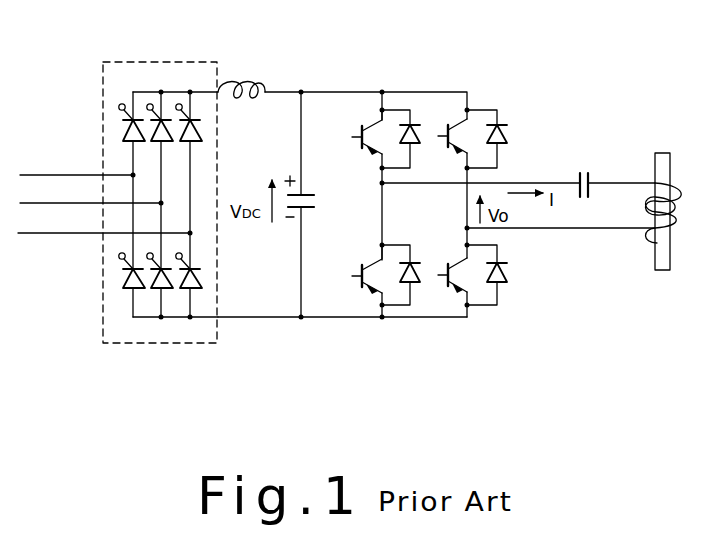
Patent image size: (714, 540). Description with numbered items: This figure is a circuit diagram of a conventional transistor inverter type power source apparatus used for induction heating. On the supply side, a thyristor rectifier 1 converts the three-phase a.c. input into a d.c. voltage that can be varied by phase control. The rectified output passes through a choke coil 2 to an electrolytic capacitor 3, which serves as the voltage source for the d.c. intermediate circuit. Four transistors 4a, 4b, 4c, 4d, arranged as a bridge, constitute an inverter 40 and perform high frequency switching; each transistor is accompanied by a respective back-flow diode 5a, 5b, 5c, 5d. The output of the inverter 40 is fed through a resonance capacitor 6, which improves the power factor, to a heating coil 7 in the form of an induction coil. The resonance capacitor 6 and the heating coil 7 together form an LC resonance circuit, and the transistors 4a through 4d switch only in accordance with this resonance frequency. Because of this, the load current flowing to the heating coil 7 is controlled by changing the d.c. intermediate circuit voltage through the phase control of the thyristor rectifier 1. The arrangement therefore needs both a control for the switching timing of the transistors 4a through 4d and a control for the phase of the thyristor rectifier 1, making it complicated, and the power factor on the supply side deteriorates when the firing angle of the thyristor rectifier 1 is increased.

The thyristor rectifier 1 is at (123, 62).
The choke coil 2 is at (252, 96).
The electrolytic capacitor 3 is at (307, 192).
The transistor 4a is at (357, 134).
The transistor 4b is at (357, 272).
The transistor 4c is at (444, 133).
The transistor 4d is at (443, 272).
The back-flow diode 5a is at (413, 147).
The back-flow diode 5b is at (413, 283).
The back-flow diode 5c is at (500, 147).
The back-flow diode 5d is at (500, 283).
The resonance capacitor 6 is at (583, 168).
The heating coil 7 is at (681, 196).
The inverter 40 is at (454, 71).